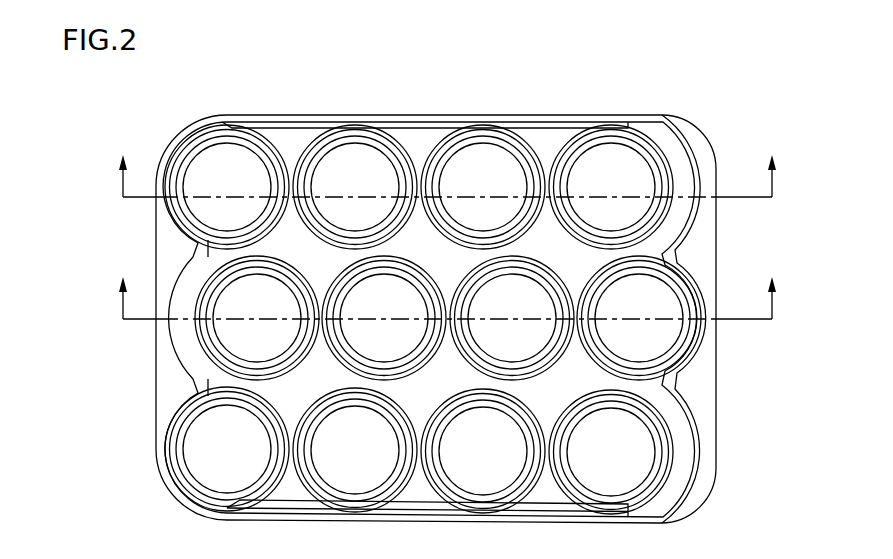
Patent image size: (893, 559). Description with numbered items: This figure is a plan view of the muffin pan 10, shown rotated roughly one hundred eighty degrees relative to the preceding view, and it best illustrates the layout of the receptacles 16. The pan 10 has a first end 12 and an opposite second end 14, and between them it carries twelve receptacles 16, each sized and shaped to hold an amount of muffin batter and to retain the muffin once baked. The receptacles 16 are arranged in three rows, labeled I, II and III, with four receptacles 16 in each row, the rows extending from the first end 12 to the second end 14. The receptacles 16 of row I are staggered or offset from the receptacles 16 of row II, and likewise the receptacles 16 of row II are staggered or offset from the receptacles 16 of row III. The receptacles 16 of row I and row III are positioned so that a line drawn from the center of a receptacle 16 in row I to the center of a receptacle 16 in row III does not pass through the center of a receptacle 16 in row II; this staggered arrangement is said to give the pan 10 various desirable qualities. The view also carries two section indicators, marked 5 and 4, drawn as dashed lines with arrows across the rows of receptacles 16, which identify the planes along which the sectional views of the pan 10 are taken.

The pan 10 is at (352, 94).
The first end 12 is at (715, 437).
The second end 14 is at (155, 392).
The receptacle 16 is at (513, 153).
The row I is at (653, 155).
The row II is at (683, 300).
The row III is at (660, 440).
The section line 5- 5 is at (447, 161).
The section line 4- 4 is at (447, 284).